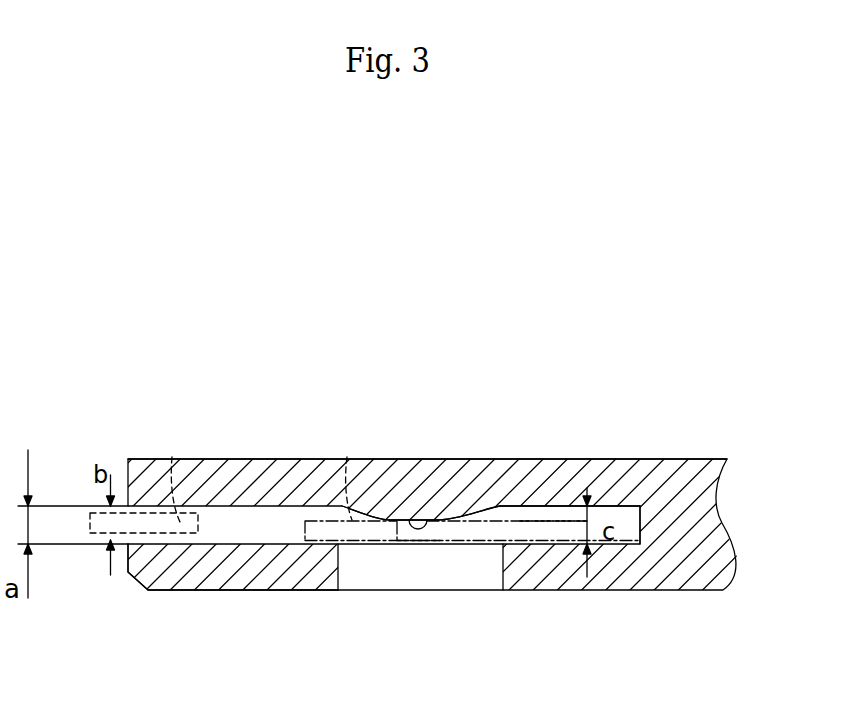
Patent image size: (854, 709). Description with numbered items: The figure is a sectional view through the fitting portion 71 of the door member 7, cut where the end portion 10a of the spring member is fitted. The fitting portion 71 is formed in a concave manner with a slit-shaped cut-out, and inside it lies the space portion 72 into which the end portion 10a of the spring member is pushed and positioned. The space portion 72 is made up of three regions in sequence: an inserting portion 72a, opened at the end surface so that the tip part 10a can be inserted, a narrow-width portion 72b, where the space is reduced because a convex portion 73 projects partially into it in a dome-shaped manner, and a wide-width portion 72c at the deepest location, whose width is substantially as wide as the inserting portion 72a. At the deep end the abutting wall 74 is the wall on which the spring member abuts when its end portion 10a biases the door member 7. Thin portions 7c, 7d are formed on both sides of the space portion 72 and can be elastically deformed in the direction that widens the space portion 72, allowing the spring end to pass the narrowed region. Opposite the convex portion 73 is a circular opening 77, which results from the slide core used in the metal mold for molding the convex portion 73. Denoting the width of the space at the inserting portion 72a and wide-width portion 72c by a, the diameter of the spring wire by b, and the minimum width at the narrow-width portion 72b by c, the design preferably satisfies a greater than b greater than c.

The door member 7 is at (706, 458).
The fitting portion 71 is at (146, 458).
The thin portion 7c is at (488, 482).
The thin portion 7d is at (296, 580).
The circular opening 77 is at (347, 572).
The convex portion 73 is at (410, 518).
The space portion 72 is at (234, 520).
The inserting portion 72a is at (127, 523).
The narrow-width portion 72b is at (423, 533).
The wide-width portion 72c is at (552, 537).
The abutting wall 74 is at (633, 527).
The end portion of the spring member 10a is at (172, 457).